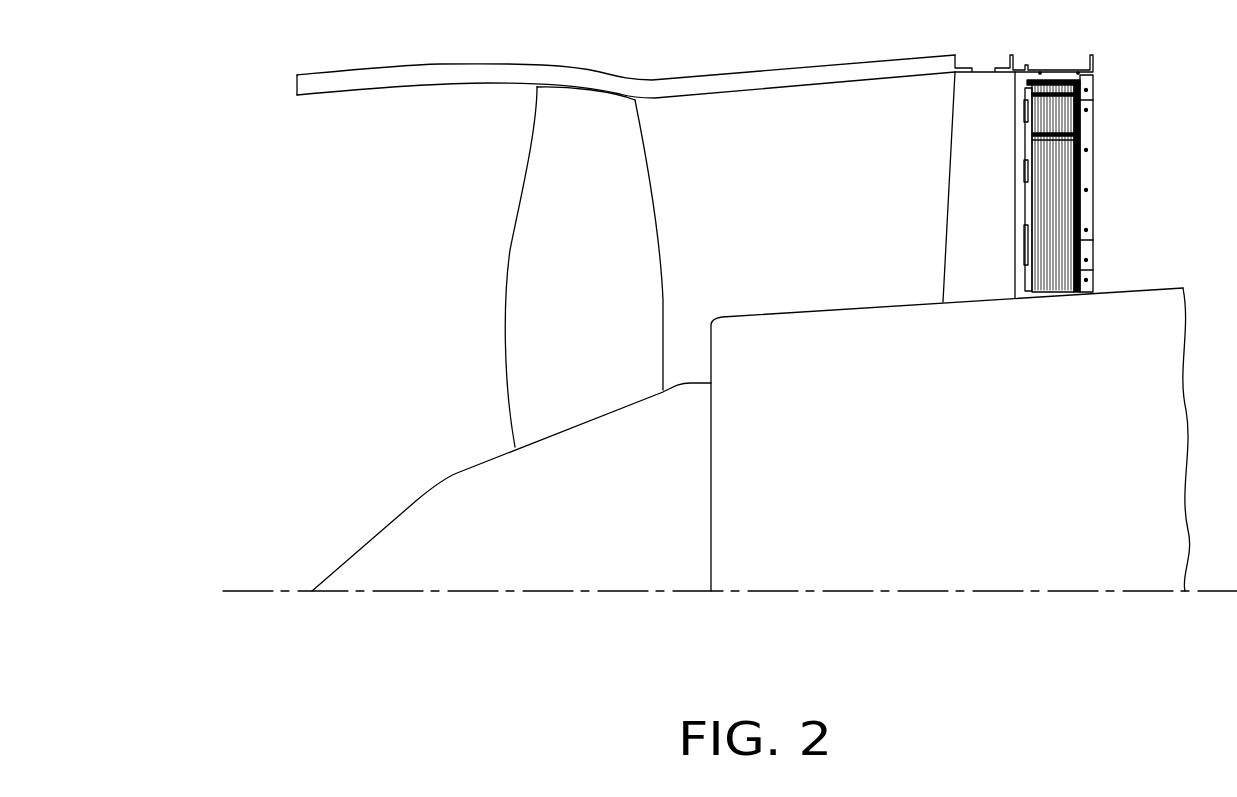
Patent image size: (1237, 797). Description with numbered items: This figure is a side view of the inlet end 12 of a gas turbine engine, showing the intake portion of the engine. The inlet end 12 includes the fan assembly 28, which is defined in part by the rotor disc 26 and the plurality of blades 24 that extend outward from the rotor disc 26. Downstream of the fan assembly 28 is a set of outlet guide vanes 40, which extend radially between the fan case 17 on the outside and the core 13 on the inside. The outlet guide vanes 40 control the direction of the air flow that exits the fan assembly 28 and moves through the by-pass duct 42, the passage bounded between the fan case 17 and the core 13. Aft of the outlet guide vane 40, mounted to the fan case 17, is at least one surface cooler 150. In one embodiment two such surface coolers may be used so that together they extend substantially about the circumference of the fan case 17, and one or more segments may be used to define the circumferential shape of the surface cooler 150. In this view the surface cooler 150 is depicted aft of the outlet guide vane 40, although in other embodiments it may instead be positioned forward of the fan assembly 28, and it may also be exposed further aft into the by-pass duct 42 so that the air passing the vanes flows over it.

The inlet end 12 is at (305, 156).
The core 13 is at (926, 530).
The fan case 17 is at (710, 96).
The blades 24 is at (618, 205).
The rotor disc 26 is at (474, 465).
The fan assembly 28 is at (432, 348).
The outlet guide vanes 40 is at (982, 192).
The by-pass duct 42 is at (846, 105).
The surface cooler 150 is at (1086, 190).